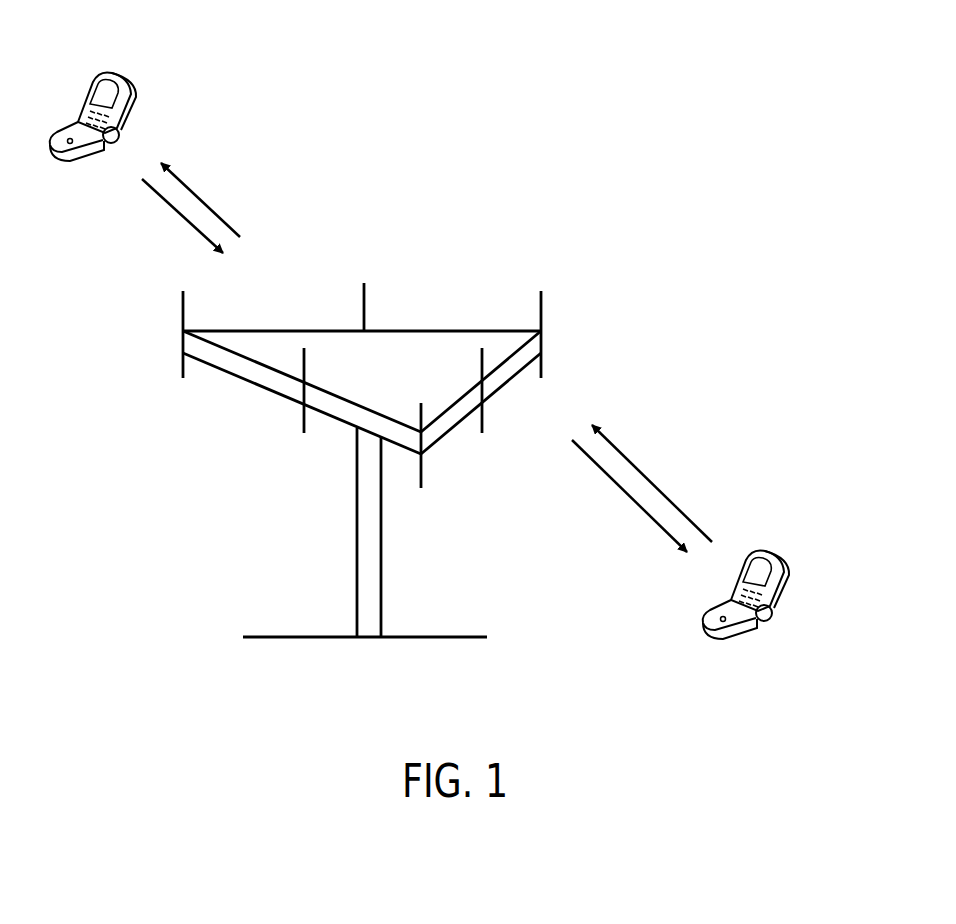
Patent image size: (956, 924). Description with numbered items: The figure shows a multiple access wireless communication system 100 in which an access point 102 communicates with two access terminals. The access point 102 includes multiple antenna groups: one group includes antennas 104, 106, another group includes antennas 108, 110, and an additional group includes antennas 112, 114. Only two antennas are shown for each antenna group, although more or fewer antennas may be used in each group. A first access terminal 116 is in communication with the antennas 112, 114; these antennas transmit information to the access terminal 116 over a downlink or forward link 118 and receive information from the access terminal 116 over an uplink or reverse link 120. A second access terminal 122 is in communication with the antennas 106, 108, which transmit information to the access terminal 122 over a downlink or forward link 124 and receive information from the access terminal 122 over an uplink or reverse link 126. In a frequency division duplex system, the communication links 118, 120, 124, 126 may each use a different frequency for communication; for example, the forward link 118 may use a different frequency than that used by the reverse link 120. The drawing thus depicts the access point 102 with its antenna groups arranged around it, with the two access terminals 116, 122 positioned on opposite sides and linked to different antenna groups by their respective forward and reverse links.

The multiple access wireless communication system 100 is at (600, 98).
The access point 102 is at (370, 638).
The antenna 104 is at (541, 298).
The antenna 106 is at (483, 420).
The antenna 108 is at (422, 480).
The antenna 110 is at (304, 423).
The antenna 112 is at (184, 309).
The antenna 114 is at (364, 292).
The access terminal 116 is at (123, 77).
The downlink or forward link 118 is at (203, 204).
The uplink or reverse link 120 is at (181, 216).
The access terminal 122 is at (777, 557).
The downlink or forward link 124 is at (632, 498).
The uplink or reverse link 126 is at (650, 482).